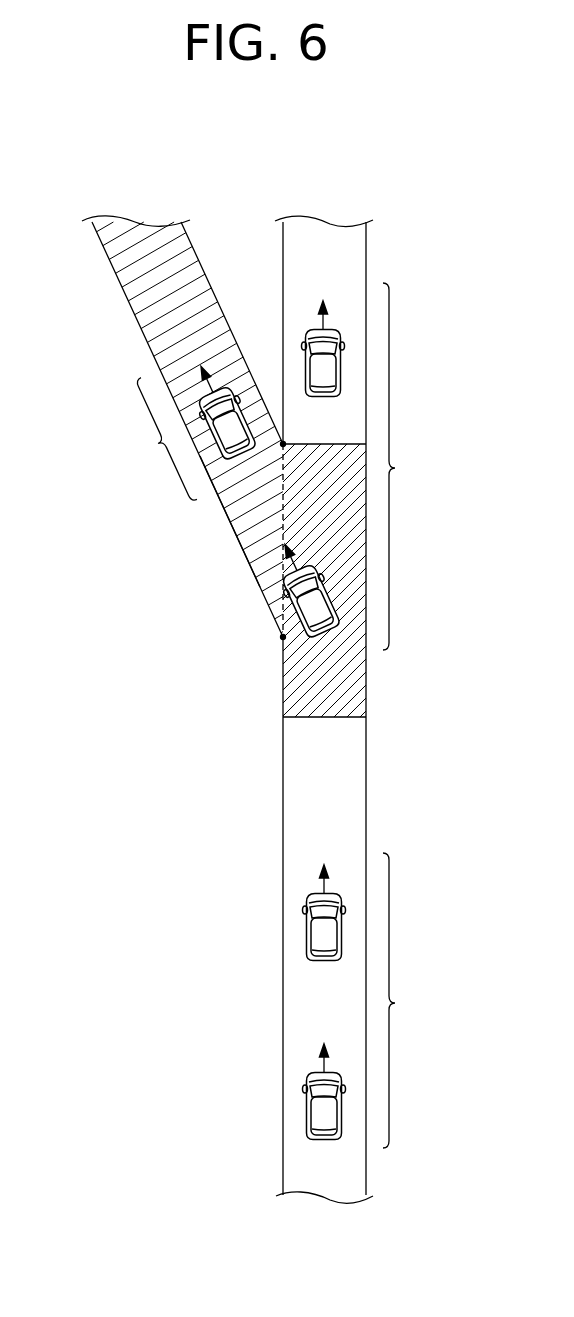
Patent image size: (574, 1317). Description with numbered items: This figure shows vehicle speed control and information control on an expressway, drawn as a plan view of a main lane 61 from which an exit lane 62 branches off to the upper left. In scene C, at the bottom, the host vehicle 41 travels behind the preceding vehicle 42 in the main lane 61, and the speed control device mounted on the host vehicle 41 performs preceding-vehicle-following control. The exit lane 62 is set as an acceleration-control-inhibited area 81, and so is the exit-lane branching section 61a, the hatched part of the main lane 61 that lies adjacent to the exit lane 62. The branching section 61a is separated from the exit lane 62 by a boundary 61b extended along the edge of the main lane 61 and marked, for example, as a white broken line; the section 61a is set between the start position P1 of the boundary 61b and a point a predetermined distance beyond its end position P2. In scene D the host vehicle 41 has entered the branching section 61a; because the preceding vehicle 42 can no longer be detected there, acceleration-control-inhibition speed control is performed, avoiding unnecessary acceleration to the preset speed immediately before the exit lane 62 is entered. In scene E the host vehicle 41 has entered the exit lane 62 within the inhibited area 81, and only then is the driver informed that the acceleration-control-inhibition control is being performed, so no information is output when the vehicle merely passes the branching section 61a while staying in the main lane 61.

The host vehicle 41 is at (223, 381).
The preceding vehicle 42 is at (337, 326).
The main lane 61 is at (354, 772).
The exit-lane branching section 61a is at (354, 692).
The boundary 61b is at (275, 563).
The exit lane 62 is at (229, 520).
The acceleration-control-inhibited area 81 is at (119, 256).
The start position of the boundary P1 is at (283, 442).
The end position of the boundary P2 is at (281, 639).
The scene C is at (401, 1000).
The scene D is at (402, 466).
The scene E is at (163, 441).